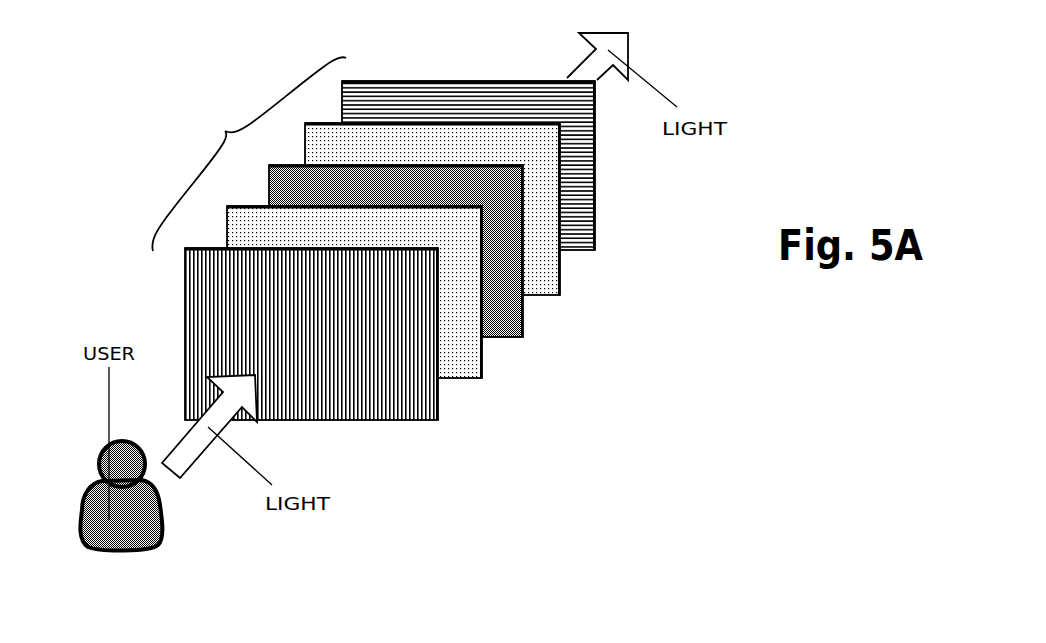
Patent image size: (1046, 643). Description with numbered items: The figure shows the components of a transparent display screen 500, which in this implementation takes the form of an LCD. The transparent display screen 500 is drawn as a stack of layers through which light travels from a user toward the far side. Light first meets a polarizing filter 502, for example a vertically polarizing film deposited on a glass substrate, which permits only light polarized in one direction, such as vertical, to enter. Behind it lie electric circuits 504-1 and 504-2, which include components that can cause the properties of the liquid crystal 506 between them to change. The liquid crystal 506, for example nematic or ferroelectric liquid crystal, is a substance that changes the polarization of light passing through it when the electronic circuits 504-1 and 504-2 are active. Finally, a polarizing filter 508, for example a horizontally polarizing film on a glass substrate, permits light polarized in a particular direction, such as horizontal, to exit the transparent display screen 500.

The transparent display screen 500 is at (420, 273).
The polarizing filter 502 is at (412, 393).
The electric circuit 504-1 is at (455, 352).
The liquid crystal 506 is at (505, 318).
The electric circuit 504-2 is at (538, 267).
The polarizing filter 508 is at (580, 233).